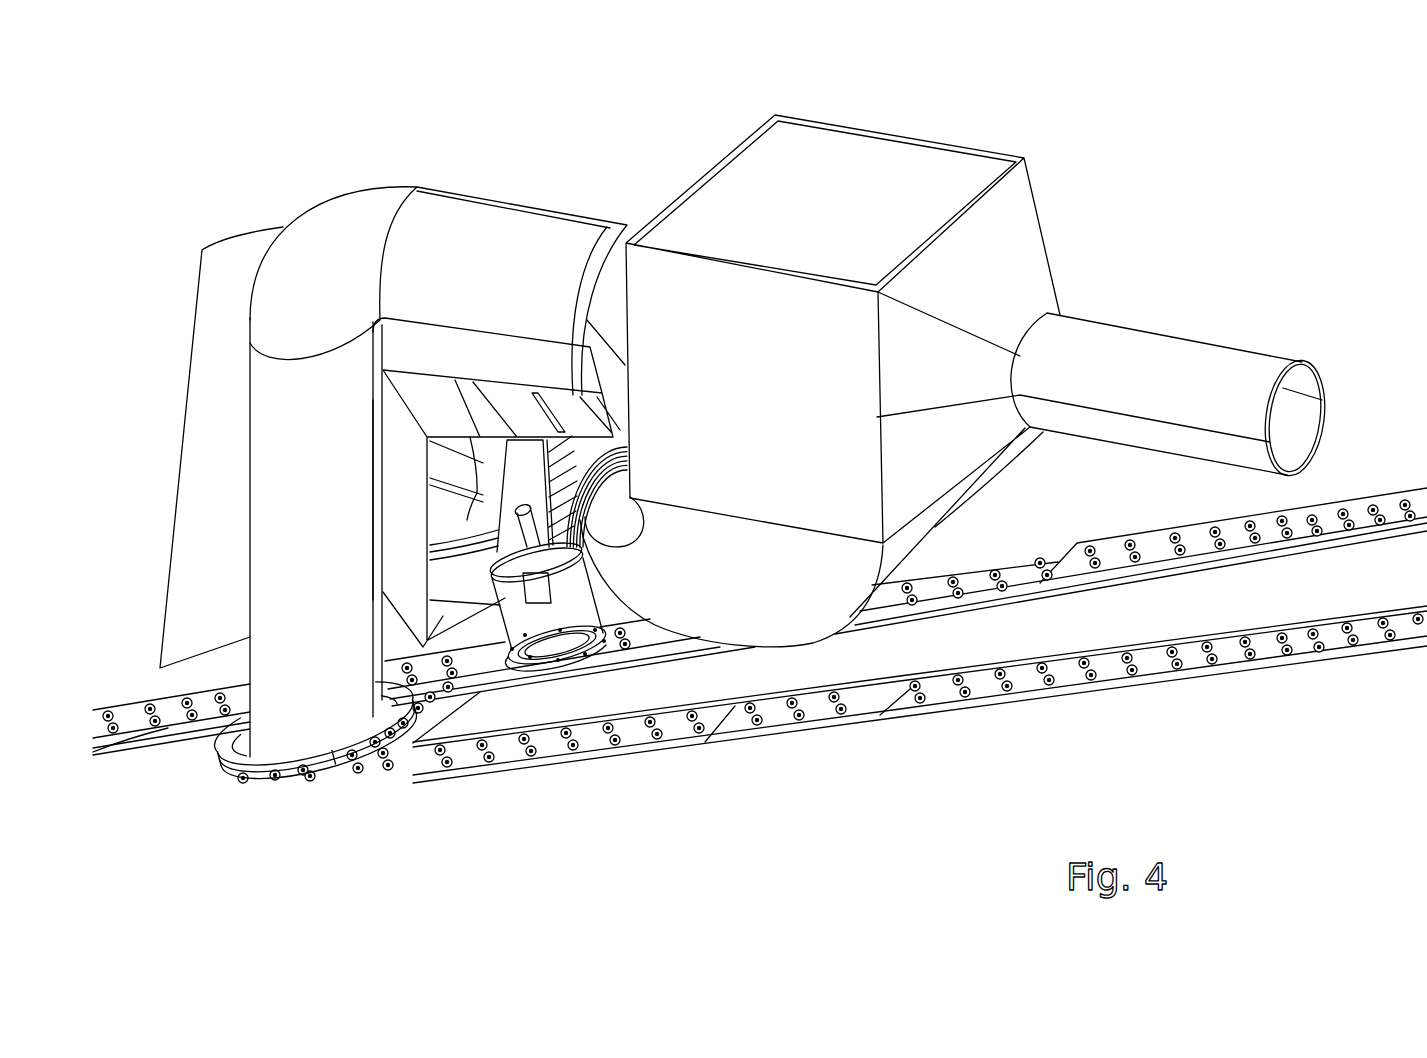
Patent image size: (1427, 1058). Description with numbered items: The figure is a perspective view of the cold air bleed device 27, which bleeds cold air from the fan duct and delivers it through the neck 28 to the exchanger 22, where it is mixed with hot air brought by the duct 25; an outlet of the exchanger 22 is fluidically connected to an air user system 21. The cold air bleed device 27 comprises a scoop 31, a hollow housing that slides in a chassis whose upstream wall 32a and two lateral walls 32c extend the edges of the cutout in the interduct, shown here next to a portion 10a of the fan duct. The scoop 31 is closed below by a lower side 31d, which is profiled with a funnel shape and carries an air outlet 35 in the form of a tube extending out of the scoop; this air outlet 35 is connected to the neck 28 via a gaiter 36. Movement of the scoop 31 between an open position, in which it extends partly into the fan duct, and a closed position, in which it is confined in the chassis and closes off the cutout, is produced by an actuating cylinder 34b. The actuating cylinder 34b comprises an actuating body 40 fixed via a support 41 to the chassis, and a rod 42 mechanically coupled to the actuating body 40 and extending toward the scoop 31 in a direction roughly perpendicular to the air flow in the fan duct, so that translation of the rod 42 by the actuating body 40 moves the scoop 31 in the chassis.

The aircraft skin panel 10a is at (240, 262).
The duct 25 is at (358, 213).
The lateral walls 32c is at (418, 390).
The lower side 31d is at (477, 460).
The support 41 is at (533, 467).
The air outlet opening 35 is at (575, 395).
The exchanger 22 is at (905, 190).
The air user system 21 is at (1333, 425).
The rod 42 is at (522, 530).
The upstream wall 32a is at (403, 518).
The cold air bleed device 27 is at (400, 637).
The scoop 31 is at (449, 522).
The actuating cylinder 34b is at (563, 686).
The actuating body 40 is at (562, 652).
The gaiter 36 is at (625, 612).
The neck 28 is at (782, 620).